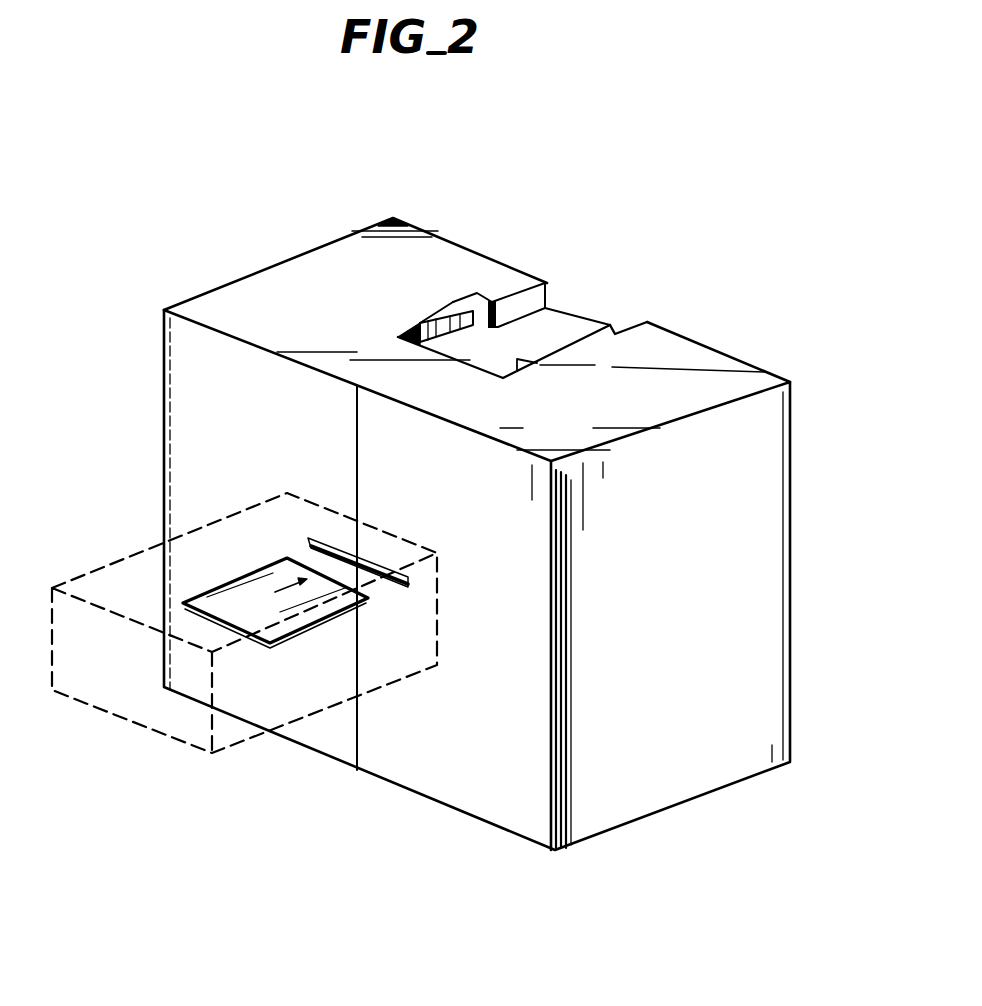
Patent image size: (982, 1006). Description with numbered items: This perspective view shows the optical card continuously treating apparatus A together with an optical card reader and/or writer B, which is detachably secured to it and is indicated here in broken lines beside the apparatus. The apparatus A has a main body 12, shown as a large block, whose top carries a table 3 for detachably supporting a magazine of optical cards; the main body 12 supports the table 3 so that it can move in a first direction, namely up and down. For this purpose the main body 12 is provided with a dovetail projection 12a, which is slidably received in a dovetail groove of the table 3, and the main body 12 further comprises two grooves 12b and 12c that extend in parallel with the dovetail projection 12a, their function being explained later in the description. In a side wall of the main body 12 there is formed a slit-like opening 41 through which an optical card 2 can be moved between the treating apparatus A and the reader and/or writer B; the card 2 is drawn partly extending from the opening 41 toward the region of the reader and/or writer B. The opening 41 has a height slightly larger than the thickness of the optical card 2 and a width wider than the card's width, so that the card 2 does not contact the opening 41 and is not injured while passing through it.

The optical card continuously treating apparatus A is at (287, 228).
The optical card reader and/or writer B is at (110, 552).
The optical card 2 is at (263, 645).
The table 3 is at (556, 322).
The main body 12 is at (730, 370).
The dovetail projection 12a is at (592, 329).
The groove 12b is at (494, 312).
The groove 12c is at (420, 324).
The slit-like opening 41 is at (396, 592).